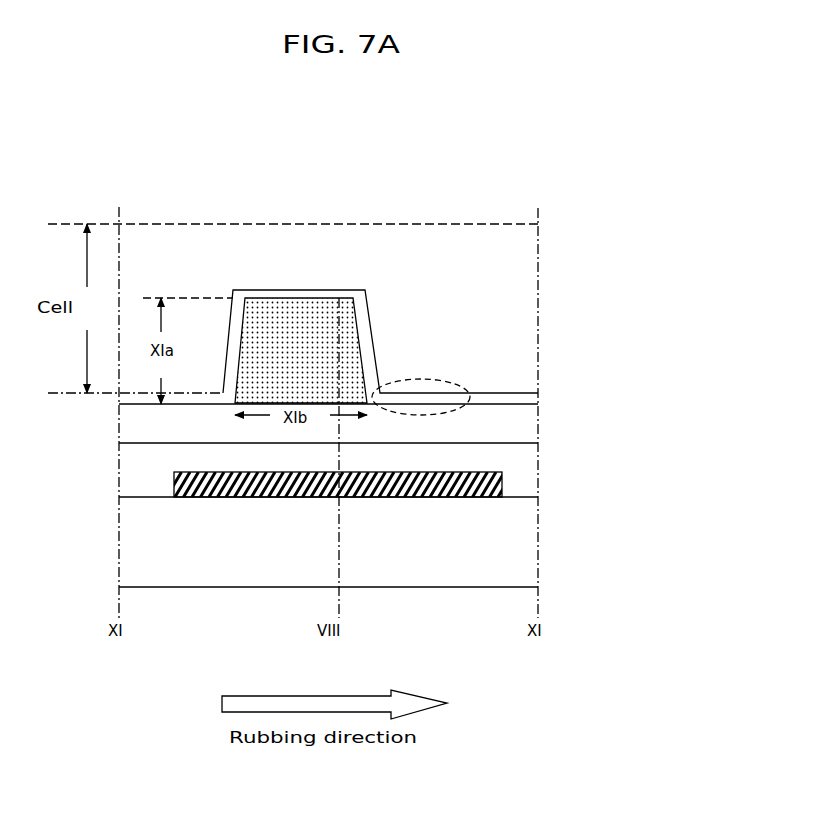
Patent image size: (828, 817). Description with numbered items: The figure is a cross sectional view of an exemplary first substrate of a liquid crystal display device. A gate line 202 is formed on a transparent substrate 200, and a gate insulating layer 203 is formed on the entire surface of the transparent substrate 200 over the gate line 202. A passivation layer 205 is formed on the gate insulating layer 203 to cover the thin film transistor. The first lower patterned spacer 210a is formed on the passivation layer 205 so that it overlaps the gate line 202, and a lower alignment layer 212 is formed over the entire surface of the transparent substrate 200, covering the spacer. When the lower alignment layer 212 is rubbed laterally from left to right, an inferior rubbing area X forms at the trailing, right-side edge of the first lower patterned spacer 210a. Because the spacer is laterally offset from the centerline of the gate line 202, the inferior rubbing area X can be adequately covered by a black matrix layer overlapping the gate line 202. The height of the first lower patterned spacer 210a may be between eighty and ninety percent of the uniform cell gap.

The lower alignment layer 212 is at (252, 292).
The first lower patterned spacer 210a is at (312, 306).
The passivation layer 205 is at (522, 420).
The gate insulating layer 203 is at (522, 457).
The gate line 202 is at (502, 483).
The transparent substrate 200 is at (322, 546).
The inferior rubbing area X is at (443, 380).